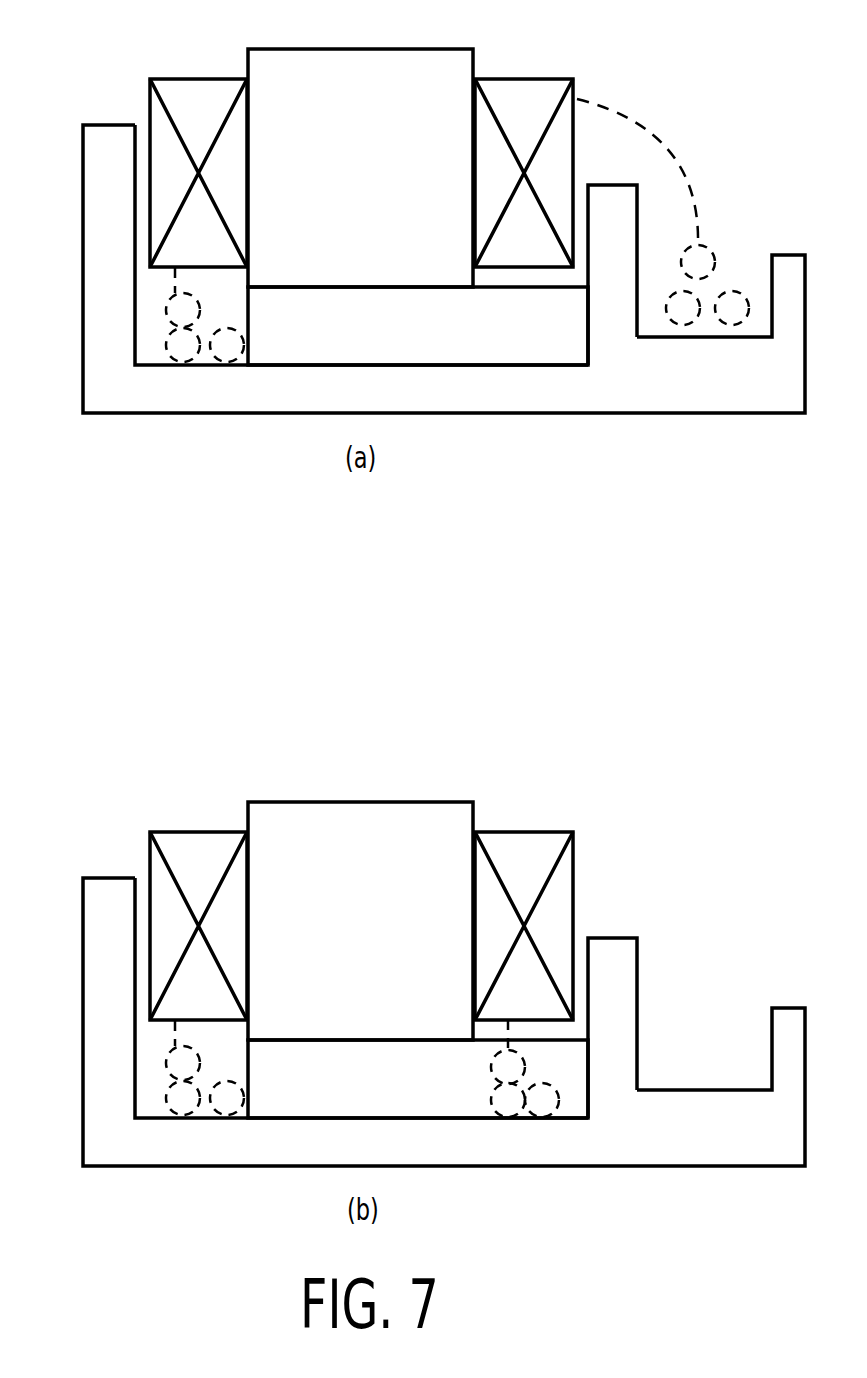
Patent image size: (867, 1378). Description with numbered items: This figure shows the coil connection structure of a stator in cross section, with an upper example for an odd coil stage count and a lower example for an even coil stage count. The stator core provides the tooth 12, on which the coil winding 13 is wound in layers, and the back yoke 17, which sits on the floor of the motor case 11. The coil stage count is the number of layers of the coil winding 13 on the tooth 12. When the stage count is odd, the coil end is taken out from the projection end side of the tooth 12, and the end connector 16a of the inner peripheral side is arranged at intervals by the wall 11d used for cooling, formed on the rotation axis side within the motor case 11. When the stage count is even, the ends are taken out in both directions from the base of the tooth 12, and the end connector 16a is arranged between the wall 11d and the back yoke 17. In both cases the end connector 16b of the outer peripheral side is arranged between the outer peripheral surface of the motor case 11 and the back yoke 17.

The motor case 11 is at (258, 416).
The wall 11d is at (638, 273).
The tooth 12 is at (361, 48).
The coil winding 13 is at (200, 78).
The end connector 16a is at (743, 252).
The end connector 16b is at (155, 333).
The back yoke 17 is at (531, 353).